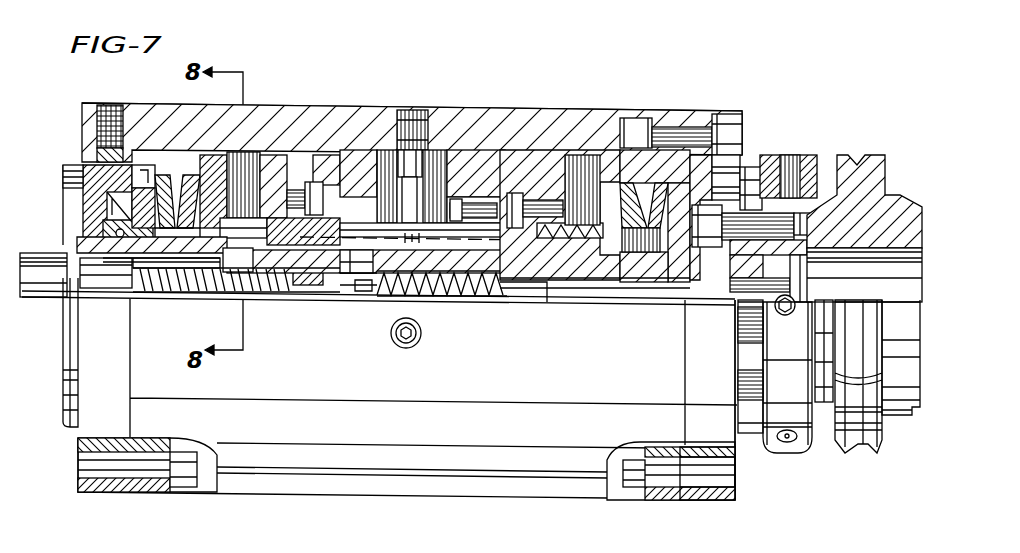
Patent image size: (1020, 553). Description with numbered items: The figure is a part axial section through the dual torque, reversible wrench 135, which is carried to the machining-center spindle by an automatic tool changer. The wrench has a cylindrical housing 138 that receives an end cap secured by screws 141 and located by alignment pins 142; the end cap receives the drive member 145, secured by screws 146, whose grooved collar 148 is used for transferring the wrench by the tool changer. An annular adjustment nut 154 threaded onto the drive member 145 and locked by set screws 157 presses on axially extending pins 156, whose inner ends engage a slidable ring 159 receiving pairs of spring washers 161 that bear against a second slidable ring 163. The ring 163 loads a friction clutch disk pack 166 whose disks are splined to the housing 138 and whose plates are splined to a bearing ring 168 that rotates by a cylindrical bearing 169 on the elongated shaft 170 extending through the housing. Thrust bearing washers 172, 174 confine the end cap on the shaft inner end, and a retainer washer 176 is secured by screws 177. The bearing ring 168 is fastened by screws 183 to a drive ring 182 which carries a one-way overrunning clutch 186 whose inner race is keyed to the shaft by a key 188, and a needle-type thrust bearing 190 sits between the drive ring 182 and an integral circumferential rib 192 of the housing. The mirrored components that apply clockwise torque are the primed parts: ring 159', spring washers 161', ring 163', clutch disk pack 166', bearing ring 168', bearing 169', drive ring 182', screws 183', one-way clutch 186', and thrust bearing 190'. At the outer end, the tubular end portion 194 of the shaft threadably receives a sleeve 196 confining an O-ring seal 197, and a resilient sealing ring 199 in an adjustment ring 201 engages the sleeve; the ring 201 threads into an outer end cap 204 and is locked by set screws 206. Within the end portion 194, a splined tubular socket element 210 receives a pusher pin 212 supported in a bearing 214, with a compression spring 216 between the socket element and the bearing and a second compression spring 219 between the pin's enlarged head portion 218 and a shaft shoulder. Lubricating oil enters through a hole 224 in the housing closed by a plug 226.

The dual torque, reversible wrench 135 is at (522, 104).
The cylindrical housing 138 is at (287, 108).
The screws 141 is at (722, 118).
The alignment pins 142 is at (150, 470).
The drive hub or member 145 is at (899, 196).
The screws 146 is at (758, 185).
The grooved collar 148 is at (845, 455).
The annular adjustment nut 154 is at (800, 455).
The pins 156 is at (737, 165).
The set screws 157 is at (790, 155).
The ring 159 is at (666, 113).
The ring 159' is at (141, 153).
The annular disk springs or spring washers 161 is at (642, 255).
The spring washers 161' is at (179, 153).
The ring 163 is at (620, 153).
The ring 163' is at (210, 153).
The friction clutch disk pack 166 is at (582, 142).
The friction clutch disk pack 166' is at (254, 148).
The bearing ring 168 is at (600, 237).
The bearing ring 168' is at (303, 272).
The cylindrical bearing 169 is at (595, 311).
The cylindrical bearing 169' is at (207, 292).
The elongated shaft 170 is at (445, 274).
The thrust bearing washer 172 is at (685, 298).
The thrust bearing washer 174 is at (712, 250).
The retainer washer 176 is at (785, 313).
The screws 177 is at (801, 302).
The drive ring 182 is at (517, 137).
The drive ring 182' is at (368, 135).
The screws 183 is at (560, 179).
The screws 183' is at (300, 148).
The one-way overrunning clutch or drive unit 186 is at (480, 138).
The one-way overrunning clutch 186' is at (364, 138).
The key 188 is at (366, 274).
The needle-type thrust bearing 190 is at (472, 151).
The needle-type thrust bearing 190' is at (417, 137).
The inwardly projecting circumferential rib 192 is at (420, 125).
The tubular outer end portion 194 is at (122, 255).
The sleeve 196 is at (103, 232).
The O-ring resilient seal 197 is at (84, 208).
The resilient sealing ring 199 is at (64, 188).
The adjustment ring 201 is at (83, 162).
The outer end cap 204 is at (87, 388).
The set screws 206 is at (98, 126).
The tubular socket element 210 is at (45, 325).
The pusher pin 212 is at (318, 293).
The bearing 214 is at (346, 286).
The compression spring 216 is at (200, 293).
The enlarged head portion 218 is at (362, 300).
The compression spring 219 is at (470, 298).
The hole 224 is at (450, 239).
The plug 226 is at (430, 110).